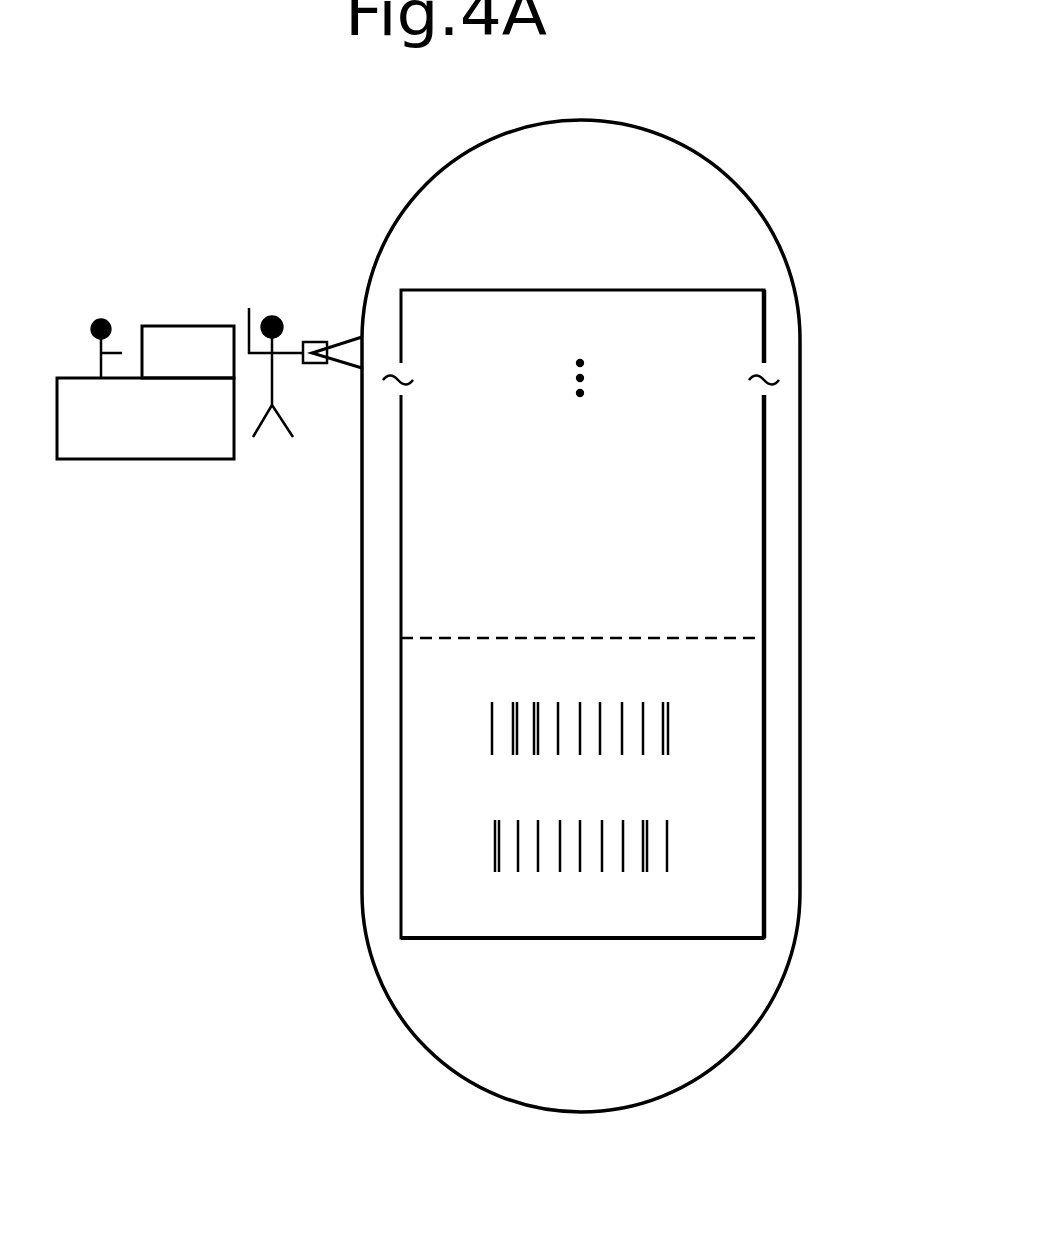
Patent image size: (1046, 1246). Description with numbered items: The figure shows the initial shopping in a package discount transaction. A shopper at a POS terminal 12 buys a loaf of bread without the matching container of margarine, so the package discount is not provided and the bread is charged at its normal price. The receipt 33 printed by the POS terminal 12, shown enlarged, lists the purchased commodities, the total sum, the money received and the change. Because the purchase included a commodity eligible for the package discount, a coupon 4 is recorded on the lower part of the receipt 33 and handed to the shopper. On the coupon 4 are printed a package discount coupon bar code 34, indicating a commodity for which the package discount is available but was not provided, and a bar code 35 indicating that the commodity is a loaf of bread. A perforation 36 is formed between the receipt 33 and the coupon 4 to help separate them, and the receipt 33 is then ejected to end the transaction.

The POS terminal 12 is at (193, 326).
The receipt 33 is at (764, 302).
The coupon 4 is at (764, 757).
The perforation 36 is at (764, 638).
The package discount coupon bar code 34 is at (670, 715).
The bar code 35 is at (667, 845).